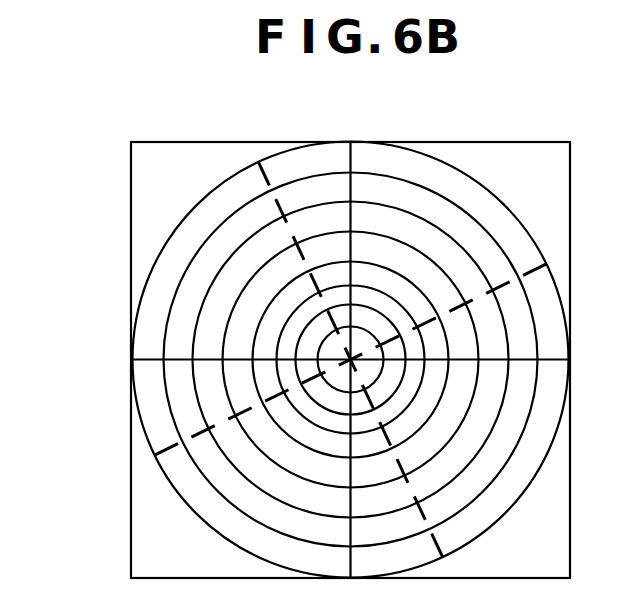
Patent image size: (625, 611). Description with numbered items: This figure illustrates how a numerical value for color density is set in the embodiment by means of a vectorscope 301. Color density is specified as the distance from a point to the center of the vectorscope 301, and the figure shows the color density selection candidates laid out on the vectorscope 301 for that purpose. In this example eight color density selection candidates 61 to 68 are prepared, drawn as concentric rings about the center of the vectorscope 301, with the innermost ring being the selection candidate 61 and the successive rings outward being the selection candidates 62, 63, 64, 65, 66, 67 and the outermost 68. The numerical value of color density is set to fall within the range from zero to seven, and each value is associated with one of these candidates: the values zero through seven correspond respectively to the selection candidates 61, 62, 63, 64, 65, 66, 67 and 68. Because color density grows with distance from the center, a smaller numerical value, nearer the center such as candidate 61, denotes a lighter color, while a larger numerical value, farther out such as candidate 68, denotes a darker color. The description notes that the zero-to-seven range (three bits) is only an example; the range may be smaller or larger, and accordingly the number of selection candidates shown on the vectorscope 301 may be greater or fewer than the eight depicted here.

The color density selection candidate 61 is at (319, 344).
The color density selection candidate 62 is at (300, 332).
The color density selection candidate 63 is at (337, 282).
The color density selection candidate 64 is at (305, 265).
The color density selection candidate 65 is at (270, 260).
The color density selection candidate 66 is at (221, 260).
The color density selection candidate 67 is at (179, 274).
The color density selection candidate 68 is at (140, 285).
The vectorscope 301 is at (462, 142).